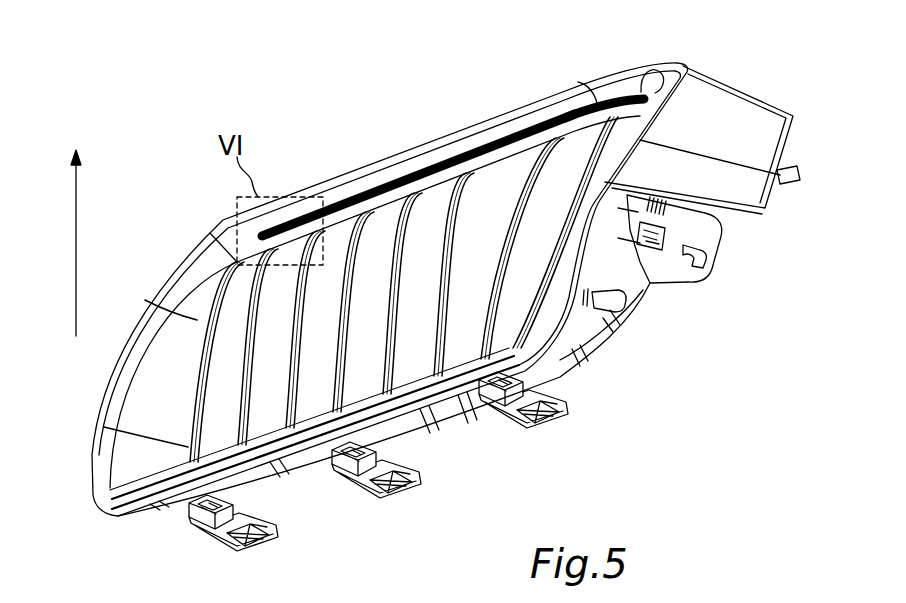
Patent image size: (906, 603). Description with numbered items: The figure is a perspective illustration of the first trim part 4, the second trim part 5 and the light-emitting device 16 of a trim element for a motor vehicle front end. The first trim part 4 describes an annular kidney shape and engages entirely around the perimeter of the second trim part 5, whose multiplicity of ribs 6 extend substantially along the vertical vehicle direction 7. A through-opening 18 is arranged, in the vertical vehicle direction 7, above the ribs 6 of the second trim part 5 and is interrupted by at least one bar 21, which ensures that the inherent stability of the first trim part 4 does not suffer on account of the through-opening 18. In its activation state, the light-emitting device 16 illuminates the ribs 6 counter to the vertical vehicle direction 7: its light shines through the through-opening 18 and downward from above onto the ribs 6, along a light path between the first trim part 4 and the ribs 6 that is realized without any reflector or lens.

The first trim part 4 is at (692, 57).
The second trim part 5 is at (611, 66).
The ribs 6 is at (615, 121).
The vertical vehicle direction 7 is at (72, 233).
The light-emitting device 16 is at (507, 152).
The through-opening 18 is at (593, 100).
The bar 21 is at (530, 117).